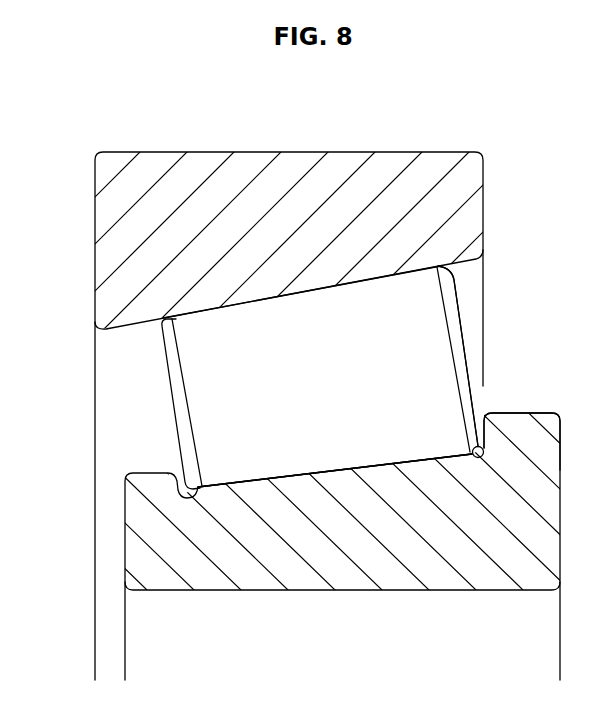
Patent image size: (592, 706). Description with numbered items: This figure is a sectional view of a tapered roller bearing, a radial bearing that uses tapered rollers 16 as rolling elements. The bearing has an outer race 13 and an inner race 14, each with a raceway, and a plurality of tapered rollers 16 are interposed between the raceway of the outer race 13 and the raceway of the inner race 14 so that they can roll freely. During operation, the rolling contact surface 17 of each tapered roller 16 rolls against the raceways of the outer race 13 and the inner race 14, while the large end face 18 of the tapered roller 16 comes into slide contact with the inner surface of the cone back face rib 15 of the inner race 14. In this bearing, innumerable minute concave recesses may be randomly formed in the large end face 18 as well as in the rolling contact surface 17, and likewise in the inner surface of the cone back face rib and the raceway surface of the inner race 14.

The outer race 13 is at (251, 167).
The inner race 14 is at (403, 580).
The cone back face rib 15 is at (525, 430).
The tapered roller 16 is at (203, 393).
The rolling contact surface 17 is at (307, 477).
The large end face 18 is at (458, 313).